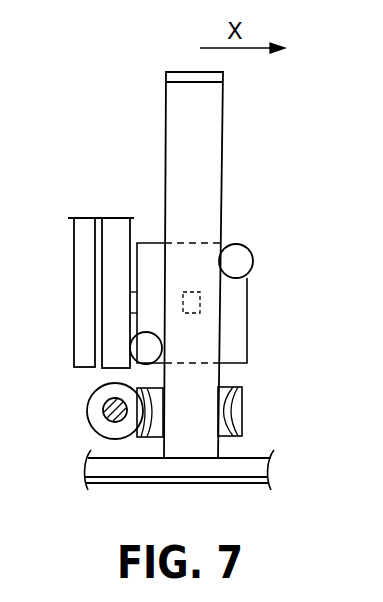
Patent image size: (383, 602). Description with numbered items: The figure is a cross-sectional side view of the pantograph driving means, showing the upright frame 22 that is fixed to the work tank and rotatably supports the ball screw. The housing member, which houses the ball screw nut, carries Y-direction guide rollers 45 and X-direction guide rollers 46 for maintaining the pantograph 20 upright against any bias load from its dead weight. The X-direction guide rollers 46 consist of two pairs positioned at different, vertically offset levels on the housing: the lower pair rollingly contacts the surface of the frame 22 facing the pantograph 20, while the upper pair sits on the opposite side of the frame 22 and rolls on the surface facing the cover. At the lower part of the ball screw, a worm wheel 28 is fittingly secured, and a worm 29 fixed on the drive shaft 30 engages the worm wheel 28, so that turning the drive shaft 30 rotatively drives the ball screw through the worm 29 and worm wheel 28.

The pantograph 20 is at (115, 222).
The frame 22 is at (211, 128).
The worm wheel 28 is at (233, 408).
The worm 29 is at (95, 403).
The drive shaft 30 is at (103, 414).
The Y-direction guide rollers 45 is at (200, 307).
The X-direction guide rollers 46 is at (246, 264).